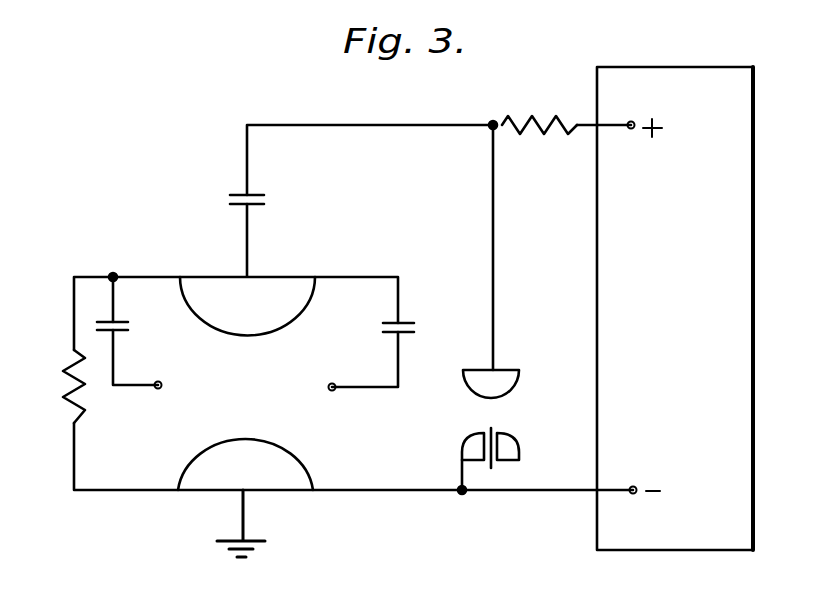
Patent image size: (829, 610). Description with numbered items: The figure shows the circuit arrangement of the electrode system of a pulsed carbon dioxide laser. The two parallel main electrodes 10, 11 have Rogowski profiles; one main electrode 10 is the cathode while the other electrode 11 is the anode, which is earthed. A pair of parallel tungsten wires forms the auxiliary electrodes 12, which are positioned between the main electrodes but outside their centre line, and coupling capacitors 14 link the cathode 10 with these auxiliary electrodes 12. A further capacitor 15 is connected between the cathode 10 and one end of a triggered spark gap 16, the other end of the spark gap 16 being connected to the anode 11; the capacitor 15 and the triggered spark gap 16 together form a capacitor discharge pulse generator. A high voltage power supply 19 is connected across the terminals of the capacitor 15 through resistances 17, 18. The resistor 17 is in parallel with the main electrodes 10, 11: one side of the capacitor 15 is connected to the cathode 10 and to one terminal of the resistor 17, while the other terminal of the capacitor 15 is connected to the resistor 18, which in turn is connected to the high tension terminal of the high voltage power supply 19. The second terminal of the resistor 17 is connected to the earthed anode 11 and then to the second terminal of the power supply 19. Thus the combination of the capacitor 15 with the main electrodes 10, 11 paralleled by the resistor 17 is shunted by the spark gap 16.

The main electrode (cathode) 10 is at (268, 289).
The main electrode (anode) 11 is at (288, 457).
The auxiliary electrodes 12 is at (162, 385).
The coupling capacitors 14 is at (126, 334).
The capacitor 15 is at (236, 193).
The triggered spark gap 16 is at (493, 418).
The resistor 17 is at (80, 405).
The resistor 18 is at (537, 119).
The high voltage power supply 19 is at (700, 222).